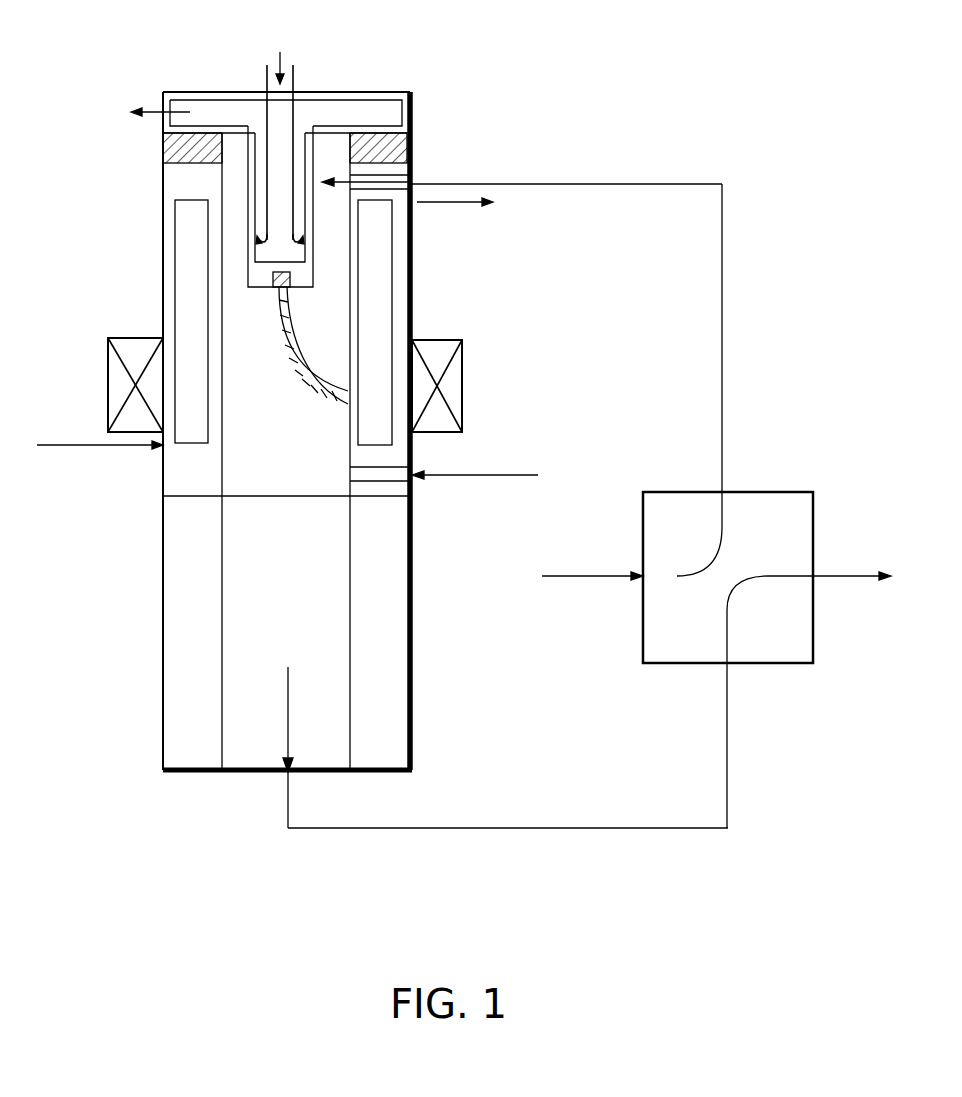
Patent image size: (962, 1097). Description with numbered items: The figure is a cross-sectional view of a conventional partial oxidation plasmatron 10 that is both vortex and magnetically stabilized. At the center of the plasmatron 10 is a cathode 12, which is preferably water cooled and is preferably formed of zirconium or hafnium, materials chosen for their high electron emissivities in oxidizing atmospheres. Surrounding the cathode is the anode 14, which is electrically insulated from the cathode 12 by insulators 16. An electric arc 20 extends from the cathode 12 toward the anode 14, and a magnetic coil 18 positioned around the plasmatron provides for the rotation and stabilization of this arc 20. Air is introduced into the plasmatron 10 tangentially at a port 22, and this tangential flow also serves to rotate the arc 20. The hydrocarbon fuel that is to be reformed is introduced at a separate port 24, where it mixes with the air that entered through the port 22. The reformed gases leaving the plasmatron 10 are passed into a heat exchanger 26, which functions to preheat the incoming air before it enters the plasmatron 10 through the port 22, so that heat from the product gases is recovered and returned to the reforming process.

The partial oxidation plasmatron 10 is at (342, 62).
The cathode 12 is at (292, 290).
The anode 14 is at (413, 298).
The insulators 16 is at (173, 146).
The magnetic coil 18 is at (466, 371).
The arc 20 is at (293, 366).
The port 22 is at (413, 164).
The port 24 is at (414, 478).
The heat exchanger 26 is at (780, 492).